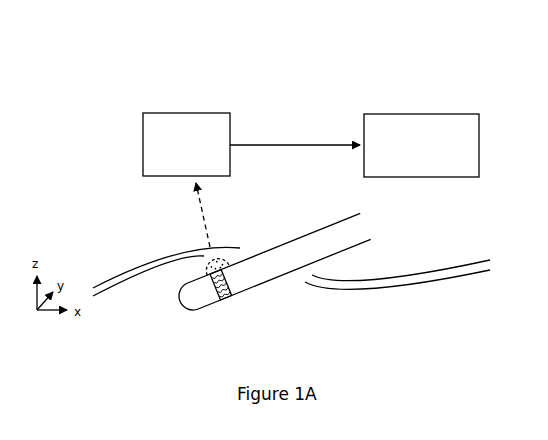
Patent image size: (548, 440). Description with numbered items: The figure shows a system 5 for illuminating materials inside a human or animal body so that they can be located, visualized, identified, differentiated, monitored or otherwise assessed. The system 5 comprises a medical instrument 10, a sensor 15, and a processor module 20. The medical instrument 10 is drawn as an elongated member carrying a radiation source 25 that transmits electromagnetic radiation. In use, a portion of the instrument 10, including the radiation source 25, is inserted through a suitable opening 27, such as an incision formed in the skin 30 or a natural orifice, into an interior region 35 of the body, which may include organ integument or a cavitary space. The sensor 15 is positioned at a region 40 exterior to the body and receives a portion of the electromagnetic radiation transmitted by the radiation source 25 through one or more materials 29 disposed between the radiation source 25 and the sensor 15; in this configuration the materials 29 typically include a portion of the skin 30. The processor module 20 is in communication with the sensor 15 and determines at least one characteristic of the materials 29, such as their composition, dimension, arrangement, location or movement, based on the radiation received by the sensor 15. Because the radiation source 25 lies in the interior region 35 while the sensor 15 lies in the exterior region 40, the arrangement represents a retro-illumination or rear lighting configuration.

The system 5 is at (306, 80).
The medical instrument 10 is at (287, 297).
The sensor 15 is at (143, 150).
The processor module 20 is at (479, 148).
The radiation source 25 is at (228, 299).
The opening 27 is at (261, 238).
The materials 29 is at (205, 258).
The skin 30 is at (106, 297).
The interior region 35 is at (397, 296).
The exterior region 40 is at (401, 257).